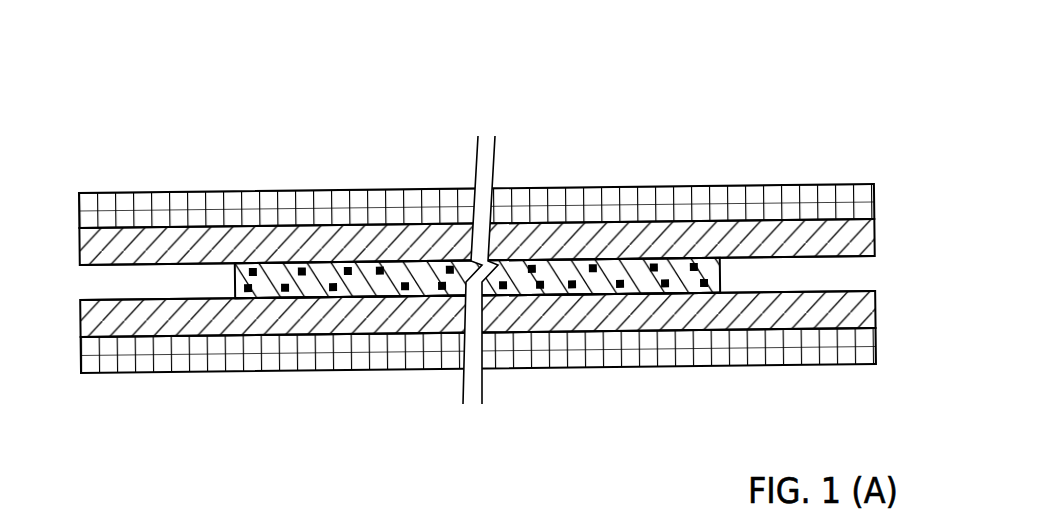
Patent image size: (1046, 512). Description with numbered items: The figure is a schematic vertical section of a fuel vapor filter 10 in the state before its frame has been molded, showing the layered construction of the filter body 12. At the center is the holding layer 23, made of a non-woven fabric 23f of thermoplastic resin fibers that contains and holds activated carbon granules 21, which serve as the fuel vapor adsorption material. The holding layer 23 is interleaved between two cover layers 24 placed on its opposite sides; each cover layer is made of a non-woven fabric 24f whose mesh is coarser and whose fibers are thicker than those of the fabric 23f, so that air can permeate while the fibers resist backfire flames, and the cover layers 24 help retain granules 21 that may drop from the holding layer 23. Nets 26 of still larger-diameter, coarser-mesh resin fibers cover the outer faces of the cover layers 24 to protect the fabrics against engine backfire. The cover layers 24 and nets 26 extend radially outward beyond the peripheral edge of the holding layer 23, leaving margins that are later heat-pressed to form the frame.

The laminated glass 10 is at (492, 273).
The filter body 12 is at (587, 172).
The activated carbon granules 21 is at (276, 296).
The holding layer 23 is at (562, 350).
The non-woven fabric 23f is at (390, 292).
The cover layers 24 is at (888, 241).
The non-woven fabric 24f is at (651, 233).
The nets 26 is at (876, 199).